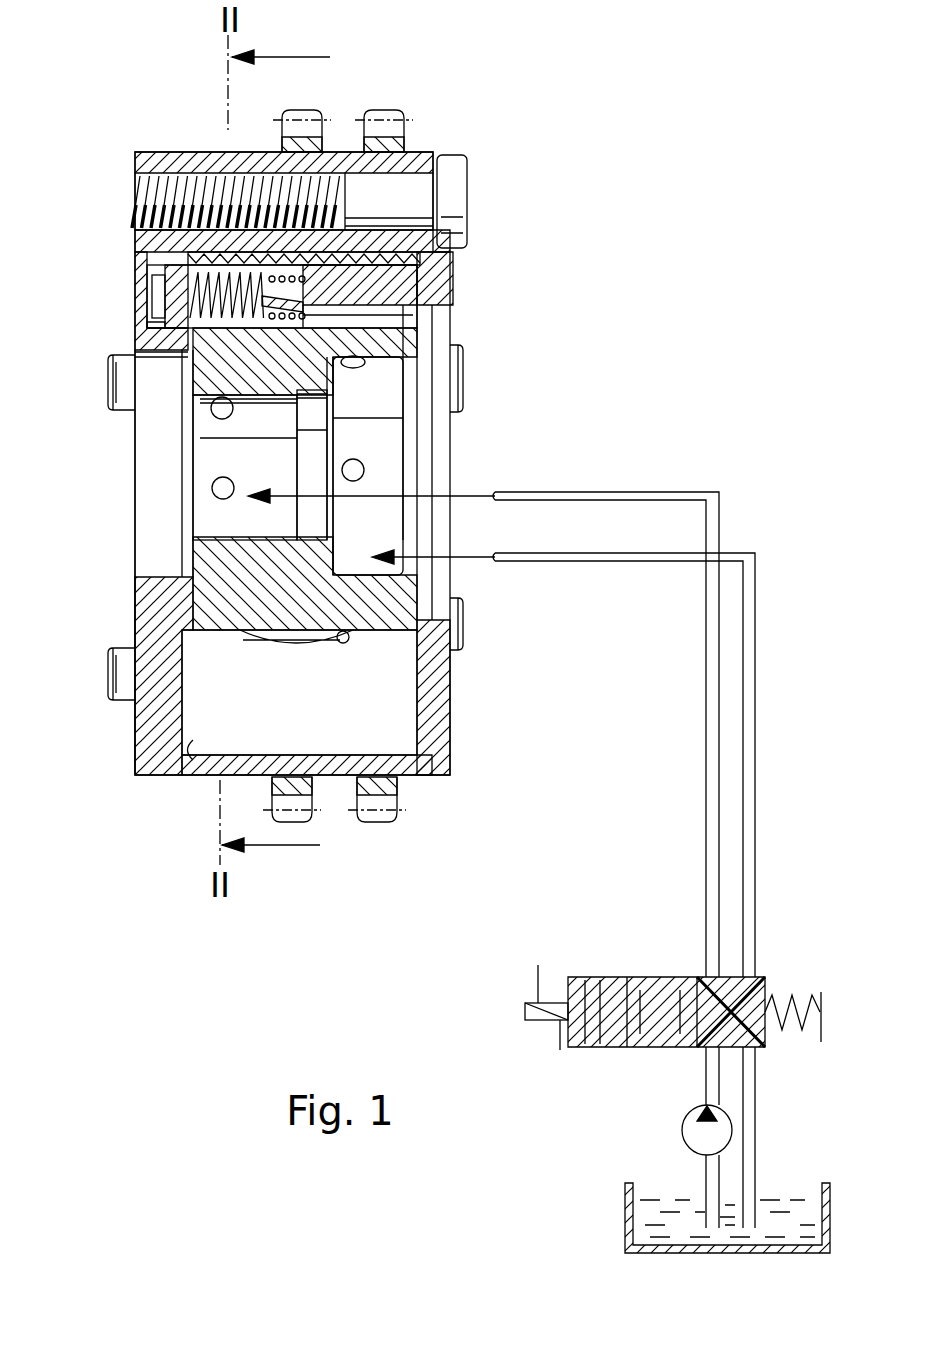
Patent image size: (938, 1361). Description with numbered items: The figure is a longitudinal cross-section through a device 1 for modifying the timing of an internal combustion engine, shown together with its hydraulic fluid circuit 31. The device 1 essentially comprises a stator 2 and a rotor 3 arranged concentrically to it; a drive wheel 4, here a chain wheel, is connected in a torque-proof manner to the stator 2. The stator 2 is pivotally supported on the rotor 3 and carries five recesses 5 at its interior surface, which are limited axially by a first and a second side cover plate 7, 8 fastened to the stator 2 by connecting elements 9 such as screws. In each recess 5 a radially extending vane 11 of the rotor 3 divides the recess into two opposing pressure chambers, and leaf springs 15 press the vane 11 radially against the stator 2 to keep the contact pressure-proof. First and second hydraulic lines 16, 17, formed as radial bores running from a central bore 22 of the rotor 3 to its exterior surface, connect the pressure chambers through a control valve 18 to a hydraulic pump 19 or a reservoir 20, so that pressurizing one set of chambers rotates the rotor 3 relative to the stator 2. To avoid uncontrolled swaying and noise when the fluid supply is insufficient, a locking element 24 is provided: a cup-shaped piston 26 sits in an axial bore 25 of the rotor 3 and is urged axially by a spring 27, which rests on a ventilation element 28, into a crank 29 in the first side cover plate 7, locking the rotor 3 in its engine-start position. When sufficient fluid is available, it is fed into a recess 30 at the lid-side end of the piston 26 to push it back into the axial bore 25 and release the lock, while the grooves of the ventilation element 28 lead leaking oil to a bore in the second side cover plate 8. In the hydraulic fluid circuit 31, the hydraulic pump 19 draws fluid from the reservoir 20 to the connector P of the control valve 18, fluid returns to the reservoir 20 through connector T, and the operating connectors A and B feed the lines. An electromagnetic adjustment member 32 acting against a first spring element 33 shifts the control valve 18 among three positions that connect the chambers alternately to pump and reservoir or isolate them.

The device 1 is at (360, 92).
The stator 2 is at (200, 157).
The rotor 3 is at (215, 606).
The drive wheel 4 is at (378, 795).
The recesses 5 is at (185, 762).
The first side cover plate 7 is at (140, 238).
The second side cover plate 8 is at (428, 758).
The connecting elements 9 is at (455, 188).
The vane 11 is at (215, 720).
The leaf springs 15 is at (325, 645).
The first hydraulic line 16 is at (222, 488).
The second hydraulic line 17 is at (358, 468).
The control valve 18 is at (672, 978).
The hydraulic pump 19 is at (705, 1136).
The reservoir 20 is at (792, 1215).
The central bore 22 is at (200, 405).
The locking element 24 is at (215, 334).
The axial bore 25 is at (453, 258).
The piston 26 is at (168, 275).
The spring 27 is at (225, 334).
The ventilation element 28 is at (420, 297).
The crank 29 is at (150, 297).
The recess 30 is at (128, 322).
The hydraulic fluid circuit 31 is at (772, 680).
The electromagnetic adjustment member 32 is at (533, 1005).
The first spring element 33 is at (778, 1000).